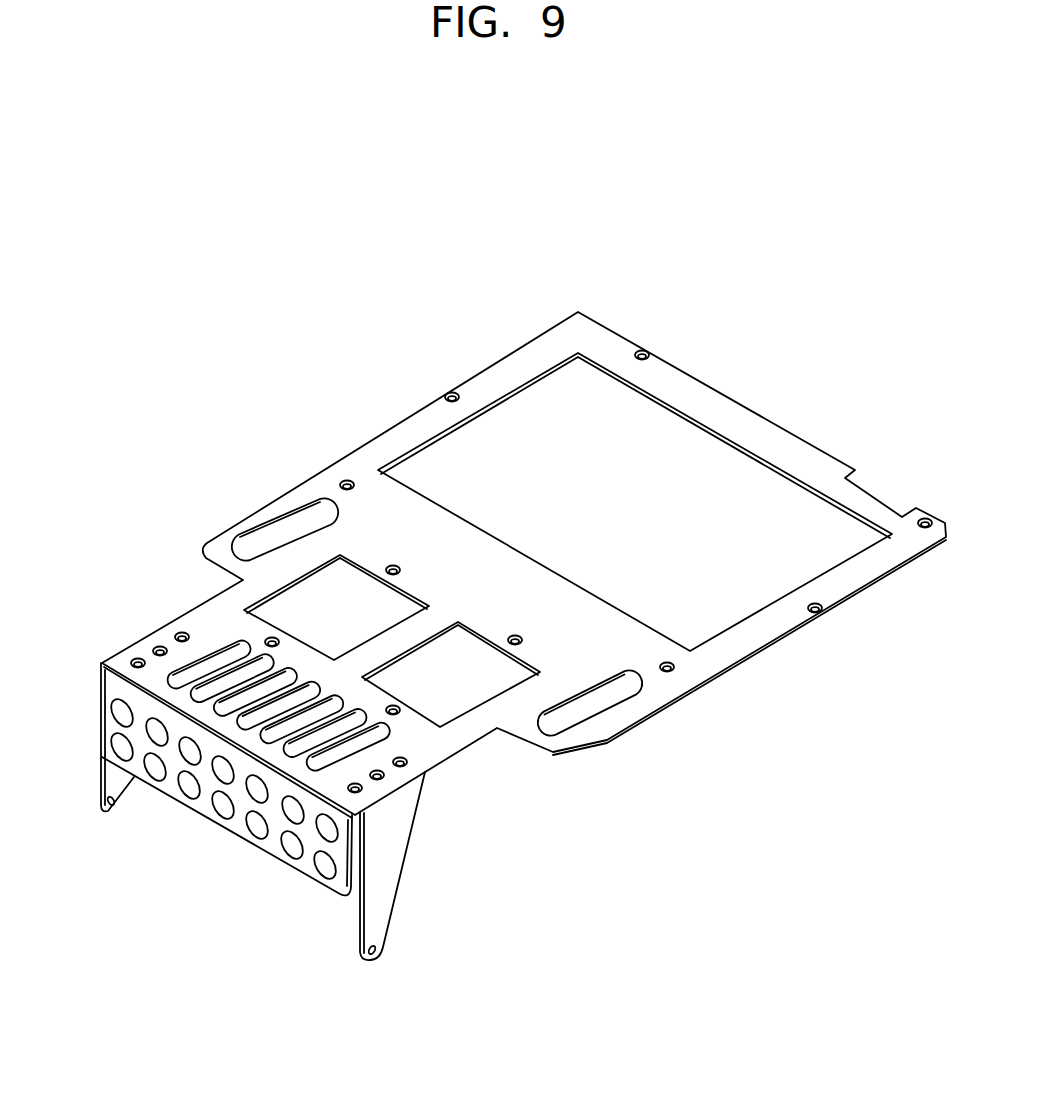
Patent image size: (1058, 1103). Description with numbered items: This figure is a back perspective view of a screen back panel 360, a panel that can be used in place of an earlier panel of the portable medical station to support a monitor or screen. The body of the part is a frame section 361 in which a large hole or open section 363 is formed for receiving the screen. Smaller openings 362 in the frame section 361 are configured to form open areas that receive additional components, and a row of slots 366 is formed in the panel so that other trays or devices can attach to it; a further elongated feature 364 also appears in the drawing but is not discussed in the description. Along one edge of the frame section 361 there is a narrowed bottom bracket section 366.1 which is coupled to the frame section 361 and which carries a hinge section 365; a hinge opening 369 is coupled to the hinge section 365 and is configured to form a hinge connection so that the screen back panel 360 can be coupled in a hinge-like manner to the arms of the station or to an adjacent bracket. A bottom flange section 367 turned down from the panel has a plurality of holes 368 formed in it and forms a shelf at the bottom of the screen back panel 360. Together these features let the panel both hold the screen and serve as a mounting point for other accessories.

The screen back panel 360 is at (630, 267).
The frame section 361 is at (427, 423).
The openings 362 is at (327, 617).
The hole or open section 363 is at (715, 488).
The slot 364 is at (603, 710).
The hinge section 365 is at (393, 867).
The slots 366 is at (213, 658).
The narrowed bottom bracket section 366.1 is at (153, 673).
The bottom flange section 367 is at (138, 773).
The holes 368 is at (199, 797).
The hinge opening 369 is at (372, 955).